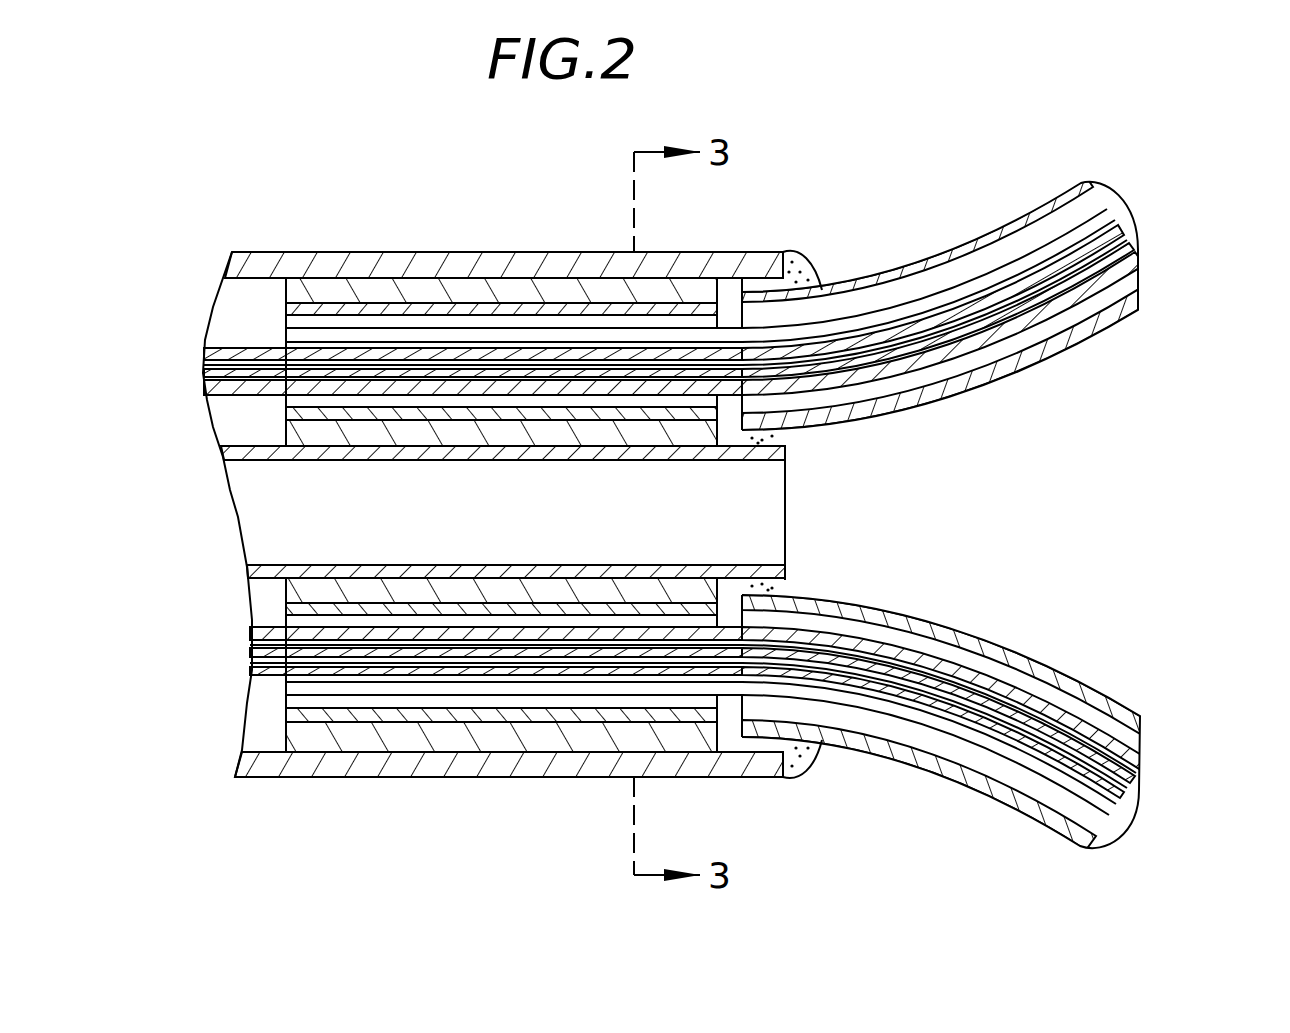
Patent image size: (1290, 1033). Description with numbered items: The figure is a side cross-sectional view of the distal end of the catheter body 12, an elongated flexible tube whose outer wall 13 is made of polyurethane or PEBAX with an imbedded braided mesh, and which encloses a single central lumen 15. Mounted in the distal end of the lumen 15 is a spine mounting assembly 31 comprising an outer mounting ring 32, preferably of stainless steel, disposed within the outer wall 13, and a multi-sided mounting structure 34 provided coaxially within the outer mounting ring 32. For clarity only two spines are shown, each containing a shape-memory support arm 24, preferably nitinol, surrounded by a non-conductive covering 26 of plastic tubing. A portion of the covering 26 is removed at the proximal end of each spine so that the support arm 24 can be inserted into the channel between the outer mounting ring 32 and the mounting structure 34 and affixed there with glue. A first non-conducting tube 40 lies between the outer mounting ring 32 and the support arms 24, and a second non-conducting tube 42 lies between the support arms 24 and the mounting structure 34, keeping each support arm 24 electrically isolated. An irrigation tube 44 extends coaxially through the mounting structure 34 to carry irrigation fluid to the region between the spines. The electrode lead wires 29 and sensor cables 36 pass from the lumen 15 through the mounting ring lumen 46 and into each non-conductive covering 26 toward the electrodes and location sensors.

The catheter body 12 is at (230, 177).
The outer wall 13 is at (260, 252).
The central lumen 15 is at (270, 612).
The support arm 24 is at (920, 307).
The non-conductive covering 26 is at (1040, 203).
The electrode lead wire 29 is at (1113, 240).
The spine mounting assembly 31 is at (268, 722).
The outer mounting ring 32 is at (395, 290).
The mounting structure 34 is at (325, 437).
The sensor cable 36 is at (232, 396).
The first non-conducting tube 40 is at (437, 300).
The second non-conducting tube 42 is at (360, 417).
The irrigation tube 44 is at (295, 458).
The mounting ring lumen 46 is at (298, 530).